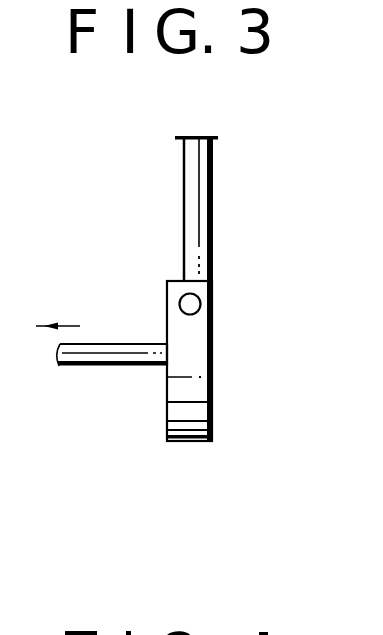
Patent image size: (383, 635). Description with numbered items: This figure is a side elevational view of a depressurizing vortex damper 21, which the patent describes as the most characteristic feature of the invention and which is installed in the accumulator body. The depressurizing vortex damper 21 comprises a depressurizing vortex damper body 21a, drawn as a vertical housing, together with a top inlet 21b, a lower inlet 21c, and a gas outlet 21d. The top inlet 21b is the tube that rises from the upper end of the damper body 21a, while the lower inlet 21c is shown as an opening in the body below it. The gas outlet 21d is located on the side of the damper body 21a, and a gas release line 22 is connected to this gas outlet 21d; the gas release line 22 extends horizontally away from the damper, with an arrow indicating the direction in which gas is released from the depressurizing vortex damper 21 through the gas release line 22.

The depressurizing vortex damper 21 is at (148, 252).
The depressurizing vortex damper body 21a is at (175, 443).
The top inlet 21b is at (212, 152).
The lower inlet 21c is at (200, 297).
The gas outlet 21d is at (157, 370).
The gas release line 22 is at (88, 369).